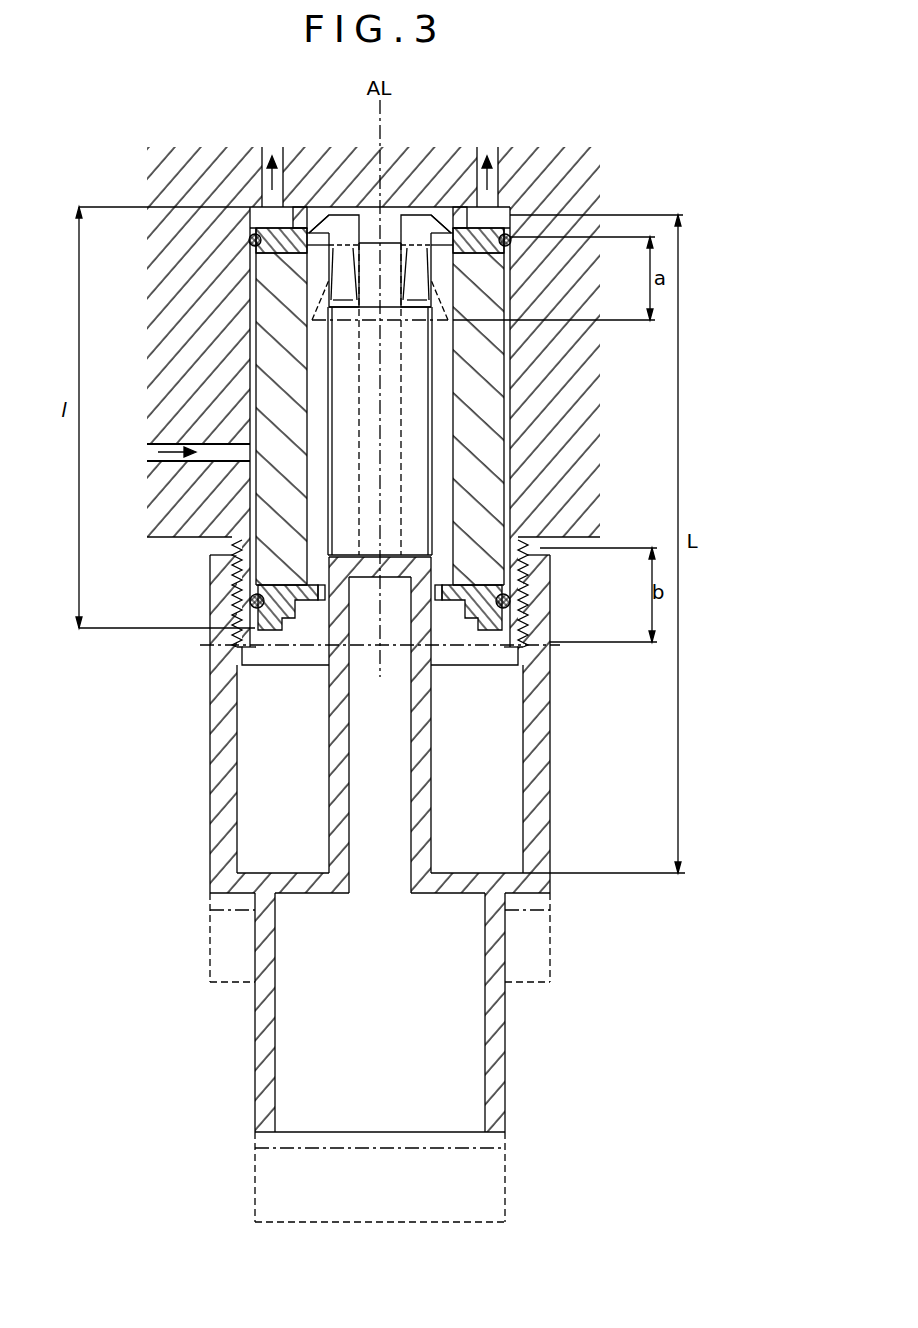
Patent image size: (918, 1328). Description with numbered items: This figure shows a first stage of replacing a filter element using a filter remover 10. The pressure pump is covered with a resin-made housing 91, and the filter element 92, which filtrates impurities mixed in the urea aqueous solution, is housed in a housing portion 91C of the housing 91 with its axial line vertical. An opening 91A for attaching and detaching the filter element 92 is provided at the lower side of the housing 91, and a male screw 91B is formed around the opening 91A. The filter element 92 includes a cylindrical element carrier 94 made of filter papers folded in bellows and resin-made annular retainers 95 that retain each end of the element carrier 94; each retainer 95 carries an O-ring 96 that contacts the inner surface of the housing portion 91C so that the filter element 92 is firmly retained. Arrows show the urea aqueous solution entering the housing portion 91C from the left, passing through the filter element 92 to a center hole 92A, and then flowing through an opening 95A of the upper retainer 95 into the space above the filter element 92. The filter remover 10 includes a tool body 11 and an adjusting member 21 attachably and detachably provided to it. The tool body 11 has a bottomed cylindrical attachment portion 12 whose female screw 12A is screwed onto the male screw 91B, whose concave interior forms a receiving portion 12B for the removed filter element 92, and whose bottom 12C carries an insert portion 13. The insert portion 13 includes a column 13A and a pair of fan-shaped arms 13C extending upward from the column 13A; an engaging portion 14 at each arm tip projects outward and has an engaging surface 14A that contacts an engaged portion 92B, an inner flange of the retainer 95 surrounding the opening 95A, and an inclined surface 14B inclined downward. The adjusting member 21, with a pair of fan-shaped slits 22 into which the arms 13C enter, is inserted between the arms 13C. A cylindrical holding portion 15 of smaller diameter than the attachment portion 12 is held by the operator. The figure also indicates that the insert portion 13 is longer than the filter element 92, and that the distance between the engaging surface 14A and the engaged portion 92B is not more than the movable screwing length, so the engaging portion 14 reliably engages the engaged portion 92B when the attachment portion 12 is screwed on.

The filter remover 10 is at (132, 748).
The tool body 11 is at (180, 740).
The attachment portion 12 is at (548, 746).
The female screw 12A is at (510, 650).
The receiving portion 12B is at (505, 805).
The bottom 12C is at (458, 873).
The insert portion 13 is at (432, 730).
The column 13A is at (432, 775).
The arms 13C is at (335, 282).
The engaging portion 14 is at (345, 219).
The engaging surface 14A is at (320, 257).
The inclined surface 14B is at (322, 236).
The holding portion 15 is at (505, 1102).
The adjusting member 21 is at (428, 417).
The slits 22 is at (402, 444).
The housing 91 is at (185, 537).
The opening 91A is at (255, 650).
The male screw 91B is at (232, 636).
The housing portion 91C is at (251, 369).
The filter element 92 is at (504, 360).
The center hole 92A is at (308, 390).
The engaged portion 92B is at (318, 243).
The element carrier 94 is at (498, 333).
The retainers 95 is at (480, 237).
The opening 95A is at (433, 243).
The O-ring 96 is at (507, 237).